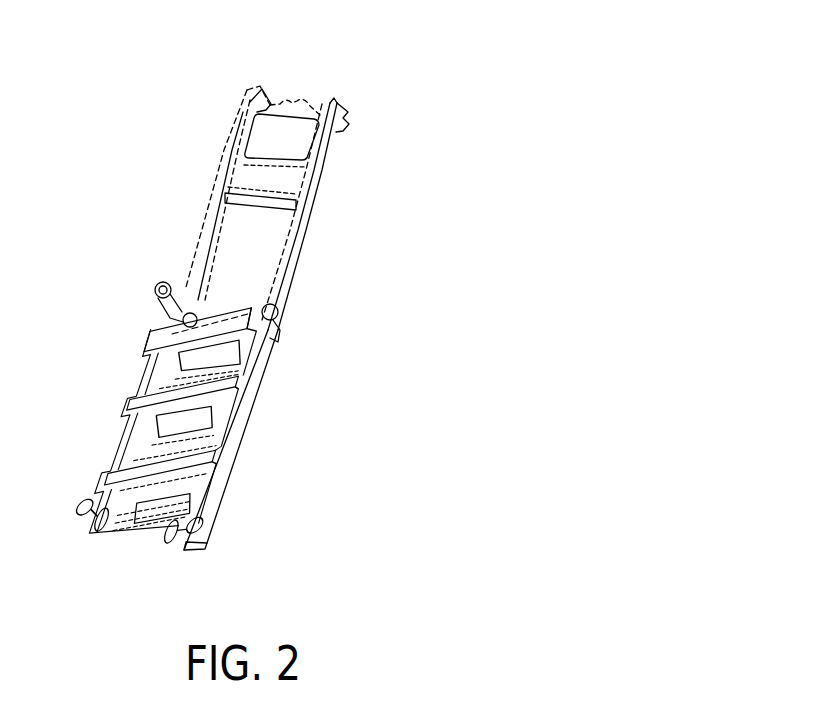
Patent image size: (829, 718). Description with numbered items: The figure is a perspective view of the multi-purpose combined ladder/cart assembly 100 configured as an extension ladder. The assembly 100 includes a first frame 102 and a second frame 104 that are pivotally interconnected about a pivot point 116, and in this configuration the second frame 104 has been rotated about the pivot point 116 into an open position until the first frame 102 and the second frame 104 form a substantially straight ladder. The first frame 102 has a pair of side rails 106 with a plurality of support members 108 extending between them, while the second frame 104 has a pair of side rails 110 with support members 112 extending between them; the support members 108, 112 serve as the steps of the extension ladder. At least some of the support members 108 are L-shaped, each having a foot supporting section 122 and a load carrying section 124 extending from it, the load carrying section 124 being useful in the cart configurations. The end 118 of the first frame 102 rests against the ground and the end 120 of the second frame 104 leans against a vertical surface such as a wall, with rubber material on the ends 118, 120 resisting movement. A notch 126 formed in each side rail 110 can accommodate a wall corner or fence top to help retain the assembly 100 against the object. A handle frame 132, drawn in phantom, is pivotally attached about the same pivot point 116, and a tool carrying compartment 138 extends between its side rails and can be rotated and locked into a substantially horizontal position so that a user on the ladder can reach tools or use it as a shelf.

The multi-purpose combined ladder/cart assembly 100 is at (480, 382).
The first frame 102 is at (222, 495).
The second frame 104 is at (321, 202).
The side rails 106 is at (123, 440).
The support members 108 is at (212, 420).
The side rails 110 is at (218, 181).
The support members 112 is at (222, 262).
The pivot point 116 is at (174, 325).
The end 118 is at (189, 551).
The end 120 is at (338, 100).
The foot supporting section 122 is at (163, 386).
The load carrying section 124 is at (193, 432).
The notch 126 is at (352, 122).
The handle frame 132 is at (283, 98).
The tool carrying compartment 138 is at (254, 146).